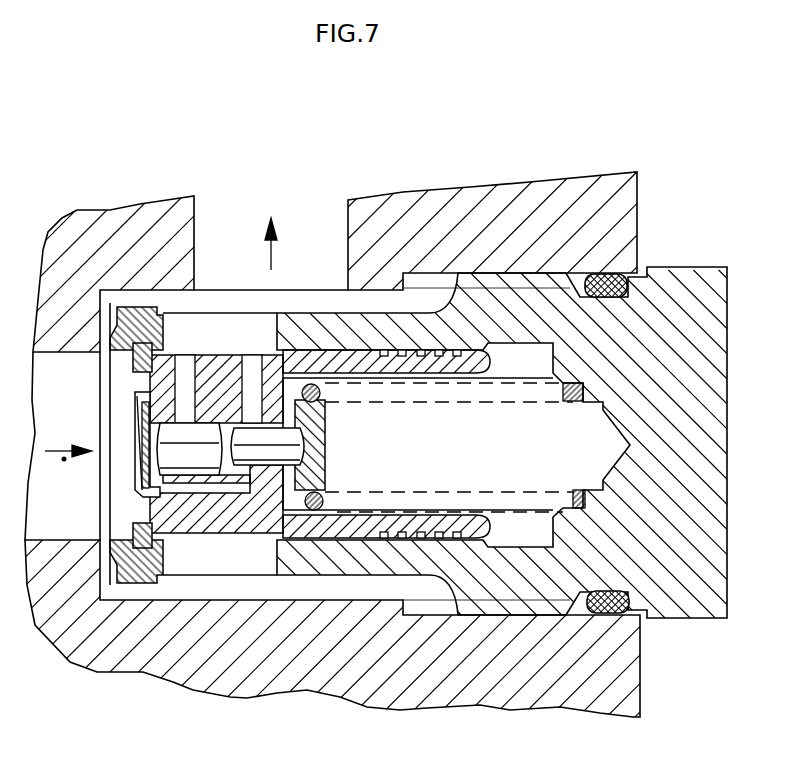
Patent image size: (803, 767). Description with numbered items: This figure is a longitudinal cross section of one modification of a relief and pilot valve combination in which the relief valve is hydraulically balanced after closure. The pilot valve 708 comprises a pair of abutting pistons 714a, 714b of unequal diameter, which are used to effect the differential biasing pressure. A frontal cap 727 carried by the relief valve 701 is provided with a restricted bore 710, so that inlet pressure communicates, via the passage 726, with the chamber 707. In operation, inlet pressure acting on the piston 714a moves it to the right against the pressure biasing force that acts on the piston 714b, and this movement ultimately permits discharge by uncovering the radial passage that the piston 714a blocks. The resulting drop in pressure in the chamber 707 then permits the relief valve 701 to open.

The relief valve 701 is at (372, 528).
The chamber 707 is at (535, 441).
The pilot valve 708 is at (228, 500).
The restricted bore 710 is at (147, 478).
The piston 714a is at (200, 447).
The piston 714b is at (292, 447).
The passage 726 is at (200, 488).
The frontal cap 727 is at (143, 545).